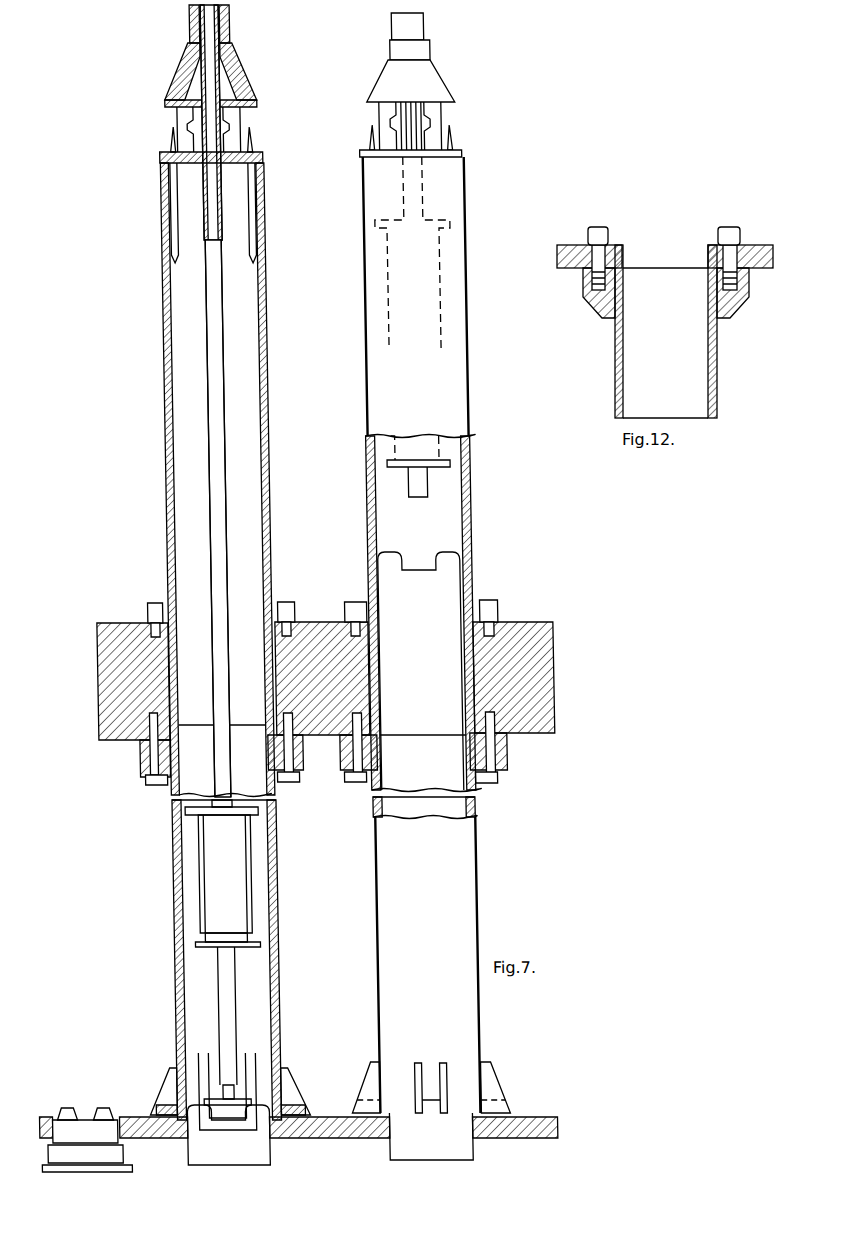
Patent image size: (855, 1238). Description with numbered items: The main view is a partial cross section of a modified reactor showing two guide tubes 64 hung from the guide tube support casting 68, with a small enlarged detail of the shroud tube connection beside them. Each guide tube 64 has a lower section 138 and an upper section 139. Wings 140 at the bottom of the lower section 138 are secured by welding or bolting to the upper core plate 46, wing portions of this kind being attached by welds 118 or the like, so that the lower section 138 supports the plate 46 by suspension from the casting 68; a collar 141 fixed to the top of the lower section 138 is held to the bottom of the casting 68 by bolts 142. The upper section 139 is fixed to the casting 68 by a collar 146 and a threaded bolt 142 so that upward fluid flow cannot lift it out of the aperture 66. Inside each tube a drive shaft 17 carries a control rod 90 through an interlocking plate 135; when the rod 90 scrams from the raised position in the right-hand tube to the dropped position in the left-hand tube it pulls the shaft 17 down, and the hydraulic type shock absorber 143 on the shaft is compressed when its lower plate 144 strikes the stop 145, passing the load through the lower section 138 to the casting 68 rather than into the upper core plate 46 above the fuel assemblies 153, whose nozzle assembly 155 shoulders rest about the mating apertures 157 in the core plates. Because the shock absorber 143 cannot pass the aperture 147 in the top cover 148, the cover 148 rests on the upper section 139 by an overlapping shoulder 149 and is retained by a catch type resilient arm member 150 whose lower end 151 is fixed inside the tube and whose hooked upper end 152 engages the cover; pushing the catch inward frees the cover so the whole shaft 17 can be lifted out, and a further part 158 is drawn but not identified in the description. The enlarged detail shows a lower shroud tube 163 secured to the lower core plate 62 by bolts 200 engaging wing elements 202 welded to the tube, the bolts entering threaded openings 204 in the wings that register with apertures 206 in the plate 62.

In FIG. 7, the drive shaft 17 is at (213, 695).
In FIG. 7, the upper core plate 46 is at (521, 1117).
In FIG. 12, the lower core plate 62 is at (752, 268).
In FIG. 7, the guide tube 64 is at (303, 894).
In FIG. 7, the aperture 66 is at (165, 680).
In FIG. 7, the guide tube support casting 68 is at (90, 673).
In FIG. 7, the control rod 90 is at (250, 1152).
In FIG. 7, the welds 118 is at (345, 603).
In FIG. 7, the interlocking plate 135 is at (197, 1125).
In FIG. 7, the lower section 138 is at (262, 842).
In FIG. 7, the upper section 139 is at (259, 518).
In FIG. 7, the wings 140 is at (343, 1095).
In FIG. 7, the collar 141 is at (129, 755).
In FIG. 7, the bolts 142 is at (139, 605).
In FIG. 7, the hydraulic type shock absorber 143 is at (228, 878).
In FIG. 7, the lower plate 144 is at (261, 945).
In FIG. 7, the stop 145 is at (245, 988).
In FIG. 7, the collar 146 is at (136, 615).
In FIG. 7, the aperture 147 is at (216, 163).
In FIG. 7, the top cover 148 is at (182, 163).
In FIG. 7, the overlapping shoulder 149 is at (158, 157).
In FIG. 7, the catch type resilient arm member 150 is at (246, 222).
In FIG. 7, the lower end 151 is at (248, 262).
In FIG. 7, the hooked upper end 152 is at (168, 146).
In FIG. 7, the fuel assemblies 153 is at (150, 1160).
In FIG. 7, the nozzle assembly 155 is at (65, 1125).
In FIG. 7, the mating apertures 157 is at (39, 1112).
In FIG. 7, the nut 158 is at (121, 1118).
In FIG. 12, the lower shroud tubes 163 is at (717, 385).
In FIG. 12, the bolts 200 is at (718, 232).
In FIG. 12, the wing elements 202 is at (592, 305).
In FIG. 12, the threaded openings 204 is at (592, 285).
In FIG. 12, the apertures 206 is at (586, 246).